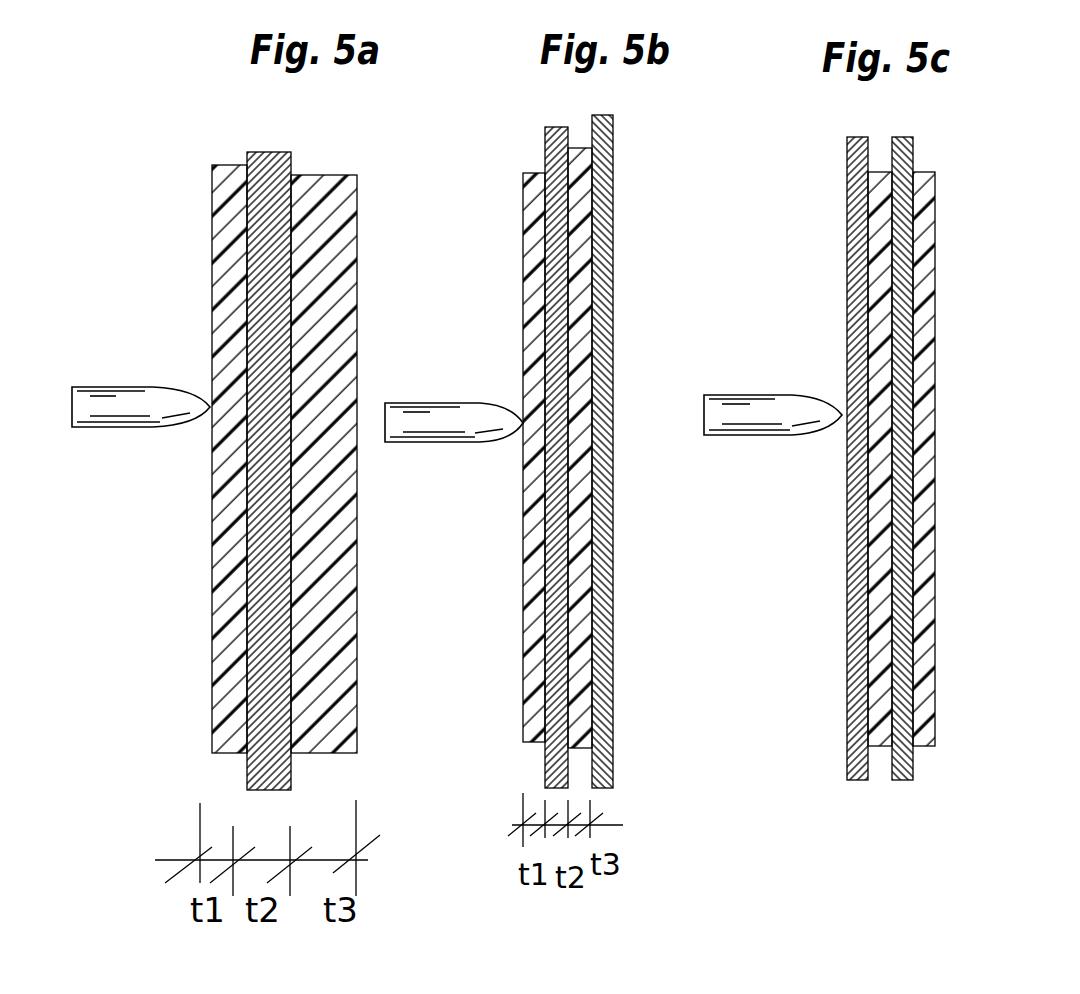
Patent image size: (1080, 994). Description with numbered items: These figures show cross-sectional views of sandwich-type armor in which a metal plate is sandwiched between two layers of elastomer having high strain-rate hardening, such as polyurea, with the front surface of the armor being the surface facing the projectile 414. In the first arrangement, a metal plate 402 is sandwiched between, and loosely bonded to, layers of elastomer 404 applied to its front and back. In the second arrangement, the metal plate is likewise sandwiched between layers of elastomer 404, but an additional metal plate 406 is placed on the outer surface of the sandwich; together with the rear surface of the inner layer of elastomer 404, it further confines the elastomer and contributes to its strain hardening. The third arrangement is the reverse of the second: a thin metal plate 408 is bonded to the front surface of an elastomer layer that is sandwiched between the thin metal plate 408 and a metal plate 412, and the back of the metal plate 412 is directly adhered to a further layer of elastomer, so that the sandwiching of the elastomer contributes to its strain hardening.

In FIG. 5A, the metal plate 402 is at (268, 187).
In FIG. 5B, the metal plate 402 is at (547, 150).
In FIG. 5A, the layers of elastomer 404 is at (233, 549).
In FIG. 5B, the layers of elastomer 404 is at (533, 527).
In FIG. 5C, the layers of elastomer 404 is at (932, 531).
In FIG. 5B, the additional metal plate 406 is at (612, 195).
In FIG. 5C, the thin metal plate 408 is at (855, 248).
In FIG. 5C, the metal plate 412 is at (933, 318).
In FIG. 5A, the projectile 414 is at (108, 383).
In FIG. 5B, the projectile 414 is at (466, 391).
In FIG. 5C, the projectile 414 is at (789, 383).